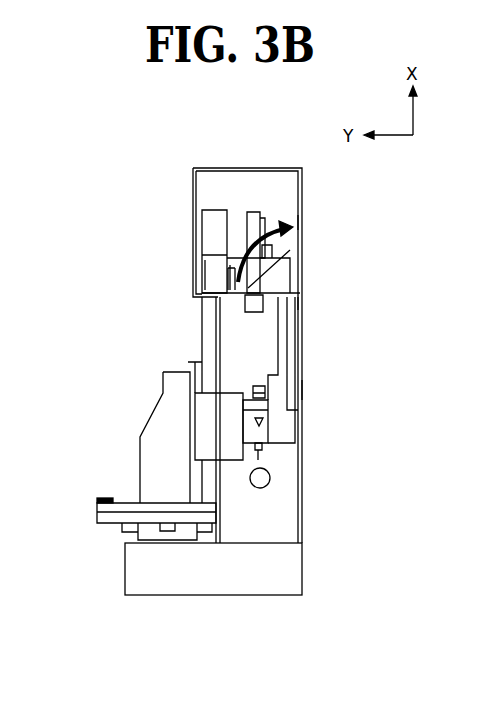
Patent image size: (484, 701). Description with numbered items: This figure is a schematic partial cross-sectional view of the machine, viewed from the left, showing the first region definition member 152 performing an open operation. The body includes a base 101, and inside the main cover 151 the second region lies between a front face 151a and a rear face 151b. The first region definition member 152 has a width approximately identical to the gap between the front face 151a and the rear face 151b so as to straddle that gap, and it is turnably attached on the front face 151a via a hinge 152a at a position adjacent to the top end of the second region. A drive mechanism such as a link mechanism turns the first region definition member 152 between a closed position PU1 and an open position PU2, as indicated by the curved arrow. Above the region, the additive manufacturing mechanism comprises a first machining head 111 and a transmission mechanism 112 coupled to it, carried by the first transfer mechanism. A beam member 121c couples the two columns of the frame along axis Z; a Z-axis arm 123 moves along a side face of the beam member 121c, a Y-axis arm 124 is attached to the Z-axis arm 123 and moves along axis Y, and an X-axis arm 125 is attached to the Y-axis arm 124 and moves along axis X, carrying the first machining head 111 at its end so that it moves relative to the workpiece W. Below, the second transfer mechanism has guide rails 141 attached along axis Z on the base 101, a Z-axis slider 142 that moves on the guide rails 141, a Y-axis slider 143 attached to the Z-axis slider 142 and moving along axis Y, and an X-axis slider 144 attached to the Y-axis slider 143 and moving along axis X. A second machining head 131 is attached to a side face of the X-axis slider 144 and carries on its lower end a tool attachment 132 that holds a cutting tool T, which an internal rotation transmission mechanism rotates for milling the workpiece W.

The base 101 is at (293, 568).
The first machining head 111 is at (262, 385).
The transmission mechanism 112 is at (212, 210).
The beam member 121c is at (207, 273).
The Z-axis arm 123 is at (265, 273).
The Y-axis arm 124 is at (252, 210).
The X-axis arm 125 is at (283, 358).
The second machining head 131 is at (283, 430).
The tool attachment 132 is at (266, 445).
The guide rails 141 is at (168, 538).
The Z-axis slider 142 is at (112, 522).
The Y-axis slider 143 is at (168, 403).
The X-axis slider 144 is at (200, 448).
The main cover 151 is at (222, 168).
The front face 151a is at (302, 388).
The rear face 151b is at (218, 430).
The first region definition member 152 is at (296, 222).
The hinge 152a is at (297, 302).
The closed position PU1 is at (220, 308).
The open position PU2 is at (298, 248).
The cutting tool T is at (268, 456).
The workpiece W is at (258, 482).